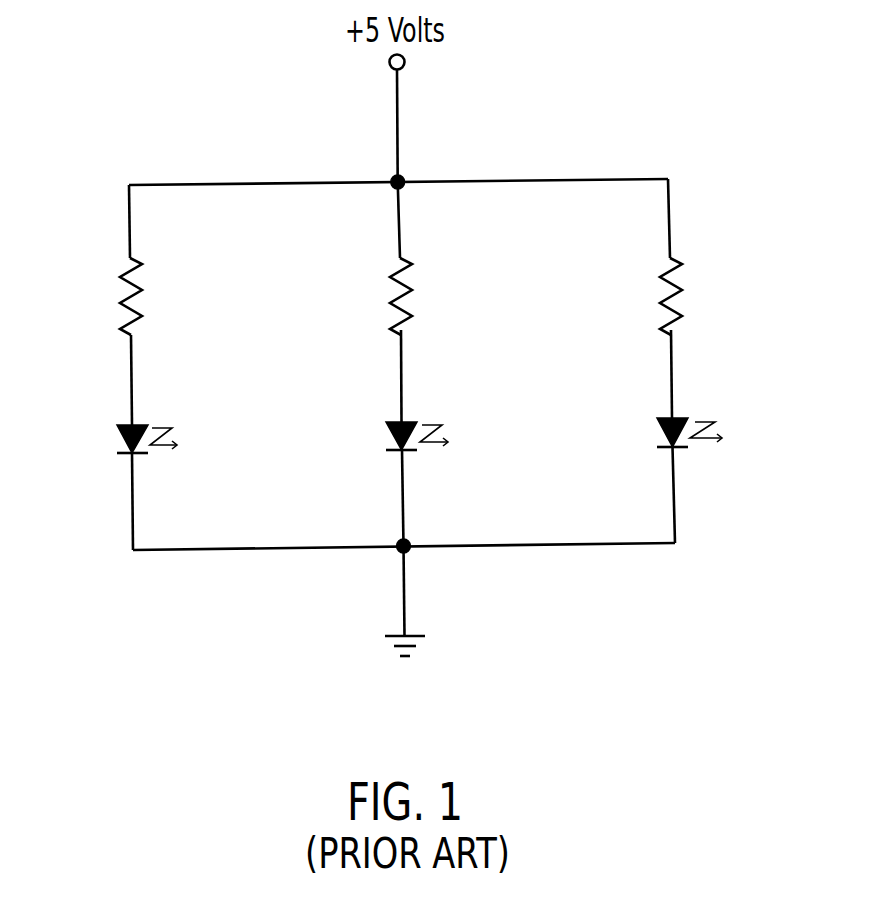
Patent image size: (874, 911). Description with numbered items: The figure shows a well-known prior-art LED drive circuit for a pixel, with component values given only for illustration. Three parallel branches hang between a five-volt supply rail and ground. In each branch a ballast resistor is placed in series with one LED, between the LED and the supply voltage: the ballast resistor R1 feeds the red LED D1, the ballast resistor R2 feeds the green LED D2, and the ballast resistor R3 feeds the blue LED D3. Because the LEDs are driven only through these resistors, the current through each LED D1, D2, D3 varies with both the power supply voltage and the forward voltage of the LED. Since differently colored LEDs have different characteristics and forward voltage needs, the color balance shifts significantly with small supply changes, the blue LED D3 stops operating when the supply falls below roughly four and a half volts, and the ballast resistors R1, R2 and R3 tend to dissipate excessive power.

The ballast resistor R1 is at (140, 284).
The ballast resistor R2 is at (405, 282).
The ballast resistor R3 is at (681, 278).
The LED D1 is at (146, 424).
The LED D2 is at (415, 421).
The LED D3 is at (686, 417).